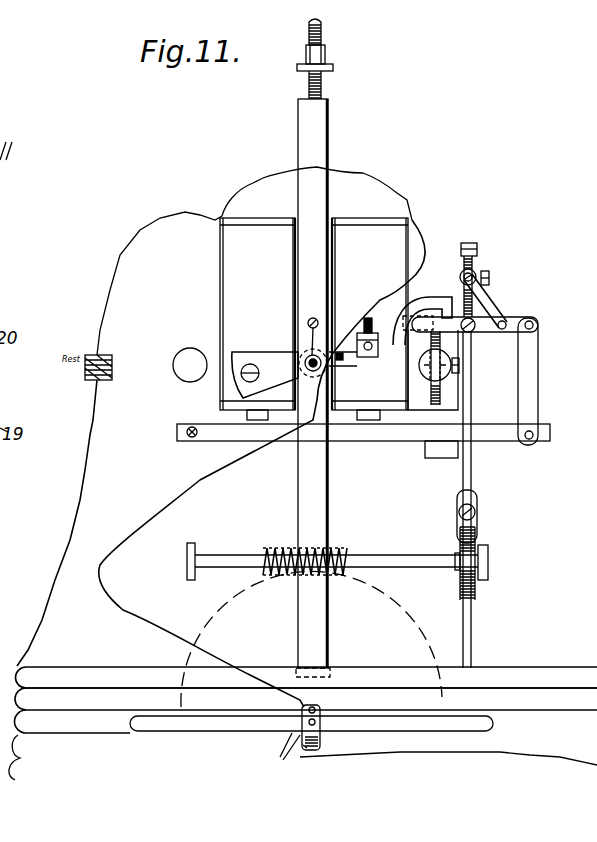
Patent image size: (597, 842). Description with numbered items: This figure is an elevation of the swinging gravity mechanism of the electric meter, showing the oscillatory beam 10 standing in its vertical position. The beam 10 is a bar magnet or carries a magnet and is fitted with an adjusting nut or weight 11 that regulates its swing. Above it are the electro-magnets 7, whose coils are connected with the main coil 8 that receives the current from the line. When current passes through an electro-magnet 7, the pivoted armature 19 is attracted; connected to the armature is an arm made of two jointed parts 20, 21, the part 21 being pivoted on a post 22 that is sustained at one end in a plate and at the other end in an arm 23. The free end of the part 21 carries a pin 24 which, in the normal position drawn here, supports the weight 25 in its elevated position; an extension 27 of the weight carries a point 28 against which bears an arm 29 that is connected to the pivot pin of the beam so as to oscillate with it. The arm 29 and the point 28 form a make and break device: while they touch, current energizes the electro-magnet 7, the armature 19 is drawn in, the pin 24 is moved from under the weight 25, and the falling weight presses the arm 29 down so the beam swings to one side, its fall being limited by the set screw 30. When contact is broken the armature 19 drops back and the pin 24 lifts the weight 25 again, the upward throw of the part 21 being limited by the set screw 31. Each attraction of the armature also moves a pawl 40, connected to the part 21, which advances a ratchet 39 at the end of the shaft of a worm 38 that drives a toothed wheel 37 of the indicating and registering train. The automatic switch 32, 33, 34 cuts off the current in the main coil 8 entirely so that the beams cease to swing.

The electro-magnet 7 is at (314, 319).
The main coil 8 is at (305, 700).
The oscillatory beam 10 is at (304, 503).
The adjusting nut or weight 11 is at (330, 68).
The armature 19 is at (508, 443).
The arm part 20 is at (531, 395).
The arm part 21 is at (516, 318).
The post 22 is at (503, 330).
The arm 23 is at (485, 300).
The pin 24 is at (433, 370).
The weight 25 is at (432, 303).
The extension 27 is at (373, 333).
The point 28 is at (372, 349).
The arm 29 is at (352, 370).
The set screw 30 is at (439, 377).
The set screw 31 is at (469, 243).
The automatic switch 32 is at (245, 721).
The automatic switch 33 is at (291, 729).
The automatic switch 34 is at (301, 748).
The toothed wheel 37 is at (410, 622).
The worm 38 is at (344, 556).
The ratchet 39 is at (479, 545).
The pawl 40 is at (462, 463).